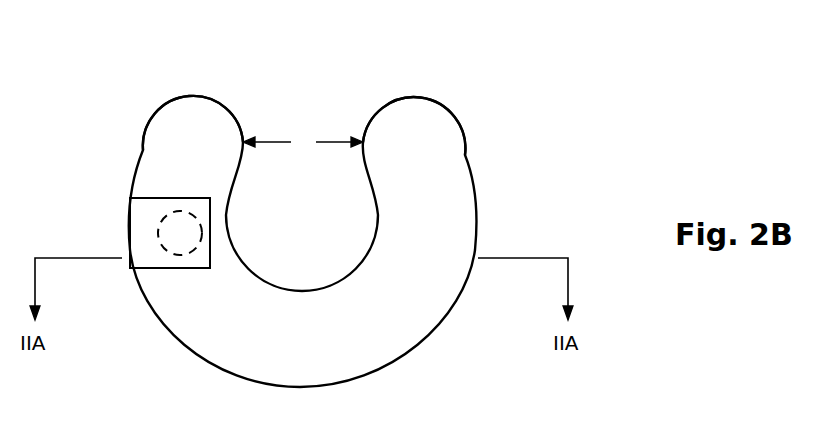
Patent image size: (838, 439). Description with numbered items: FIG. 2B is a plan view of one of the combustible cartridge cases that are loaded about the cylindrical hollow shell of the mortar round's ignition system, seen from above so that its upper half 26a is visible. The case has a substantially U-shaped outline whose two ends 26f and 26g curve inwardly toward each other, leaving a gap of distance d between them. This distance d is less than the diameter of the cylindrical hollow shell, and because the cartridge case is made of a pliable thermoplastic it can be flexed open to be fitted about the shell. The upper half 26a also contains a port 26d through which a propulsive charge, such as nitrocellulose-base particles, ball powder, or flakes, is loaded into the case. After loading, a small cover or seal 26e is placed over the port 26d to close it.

The upper half 26a is at (490, 97).
The port 26d is at (177, 232).
The cover or seal 26e is at (150, 262).
The end 26f is at (200, 101).
The end 26g is at (385, 105).
The distance d is at (303, 142).